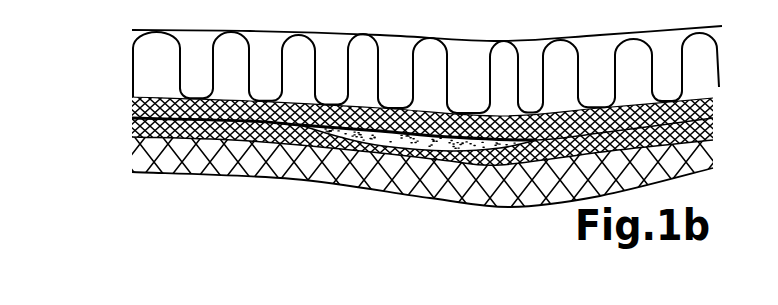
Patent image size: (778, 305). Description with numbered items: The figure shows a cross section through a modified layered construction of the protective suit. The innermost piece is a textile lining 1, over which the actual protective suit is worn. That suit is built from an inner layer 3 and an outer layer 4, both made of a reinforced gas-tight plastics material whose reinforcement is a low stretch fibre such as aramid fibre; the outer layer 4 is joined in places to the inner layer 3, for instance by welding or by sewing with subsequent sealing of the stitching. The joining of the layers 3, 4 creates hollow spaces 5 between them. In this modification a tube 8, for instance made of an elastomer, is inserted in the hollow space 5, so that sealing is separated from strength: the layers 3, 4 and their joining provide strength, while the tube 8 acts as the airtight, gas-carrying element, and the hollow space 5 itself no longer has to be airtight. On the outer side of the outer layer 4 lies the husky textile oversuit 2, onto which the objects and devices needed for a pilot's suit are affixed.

The textile lining 1 is at (168, 57).
The textile oversuit 2 is at (155, 162).
The inner layer 3 is at (137, 108).
The outer layer 4 is at (137, 131).
The hollow space 5 is at (293, 178).
The tube 8 is at (428, 152).